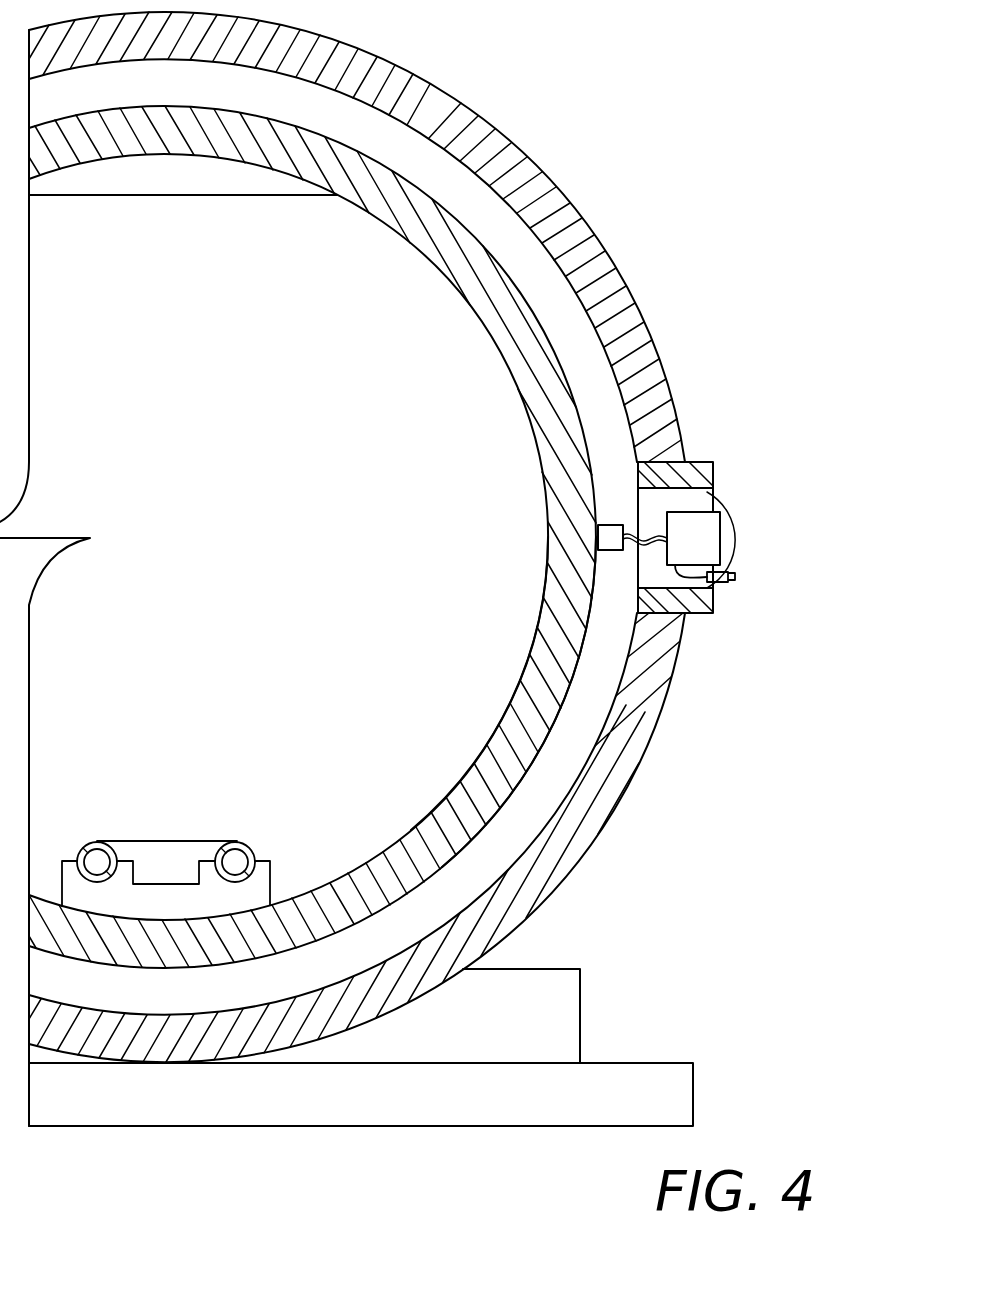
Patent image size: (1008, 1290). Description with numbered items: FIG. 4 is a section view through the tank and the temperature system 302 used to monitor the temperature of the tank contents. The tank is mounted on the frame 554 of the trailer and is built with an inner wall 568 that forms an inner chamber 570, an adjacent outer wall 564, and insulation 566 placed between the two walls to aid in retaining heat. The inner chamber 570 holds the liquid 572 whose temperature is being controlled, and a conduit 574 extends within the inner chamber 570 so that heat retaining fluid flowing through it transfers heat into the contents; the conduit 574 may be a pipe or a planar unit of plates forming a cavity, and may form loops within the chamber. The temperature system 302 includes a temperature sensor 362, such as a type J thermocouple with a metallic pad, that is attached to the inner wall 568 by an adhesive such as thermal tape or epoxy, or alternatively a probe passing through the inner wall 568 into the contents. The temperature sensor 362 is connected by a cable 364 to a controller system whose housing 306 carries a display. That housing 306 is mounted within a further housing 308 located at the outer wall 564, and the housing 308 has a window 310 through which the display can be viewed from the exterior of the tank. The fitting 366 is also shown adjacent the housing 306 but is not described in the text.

The temperature system 302 is at (646, 510).
The housing 306 is at (700, 537).
The housing 308 is at (705, 618).
The window 310 is at (713, 492).
The temperature sensor 362 is at (607, 537).
The cable 364 is at (640, 530).
The connector 366 is at (728, 578).
The frame 554 is at (615, 1060).
The outer wall 564 is at (655, 728).
The insulation 566 is at (590, 692).
The inner wall 568 is at (532, 772).
The inner chamber 570 is at (413, 762).
The liquid 572 is at (175, 197).
The conduit 574 is at (158, 855).